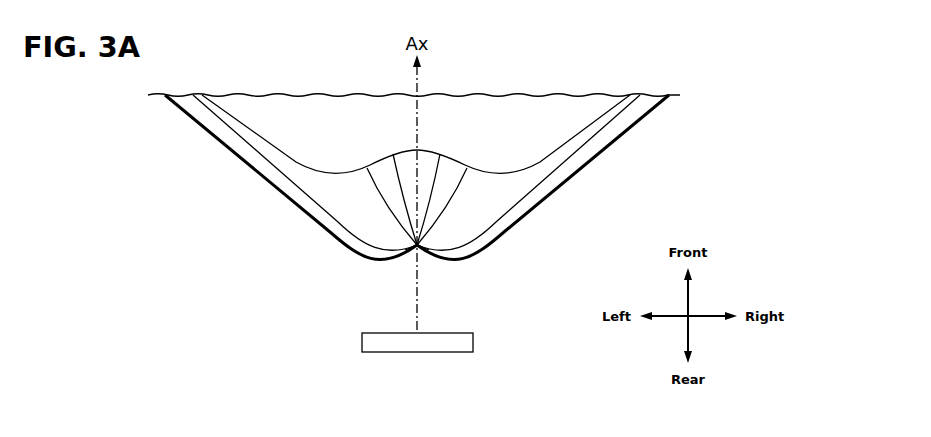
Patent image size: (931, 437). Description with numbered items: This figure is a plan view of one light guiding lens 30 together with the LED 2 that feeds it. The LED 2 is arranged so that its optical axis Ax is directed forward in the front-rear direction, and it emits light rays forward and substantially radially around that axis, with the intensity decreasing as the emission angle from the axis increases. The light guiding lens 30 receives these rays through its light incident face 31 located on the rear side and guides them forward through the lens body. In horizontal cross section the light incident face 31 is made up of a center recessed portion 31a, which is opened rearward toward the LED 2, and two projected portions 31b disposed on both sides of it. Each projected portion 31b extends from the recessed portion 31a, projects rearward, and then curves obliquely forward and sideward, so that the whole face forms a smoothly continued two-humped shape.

The LED 2 is at (473, 352).
The light guiding lens 30 is at (565, 105).
The light incident face 31 is at (525, 188).
The recessed portion 31a is at (402, 257).
The projected portion 31b is at (330, 231).